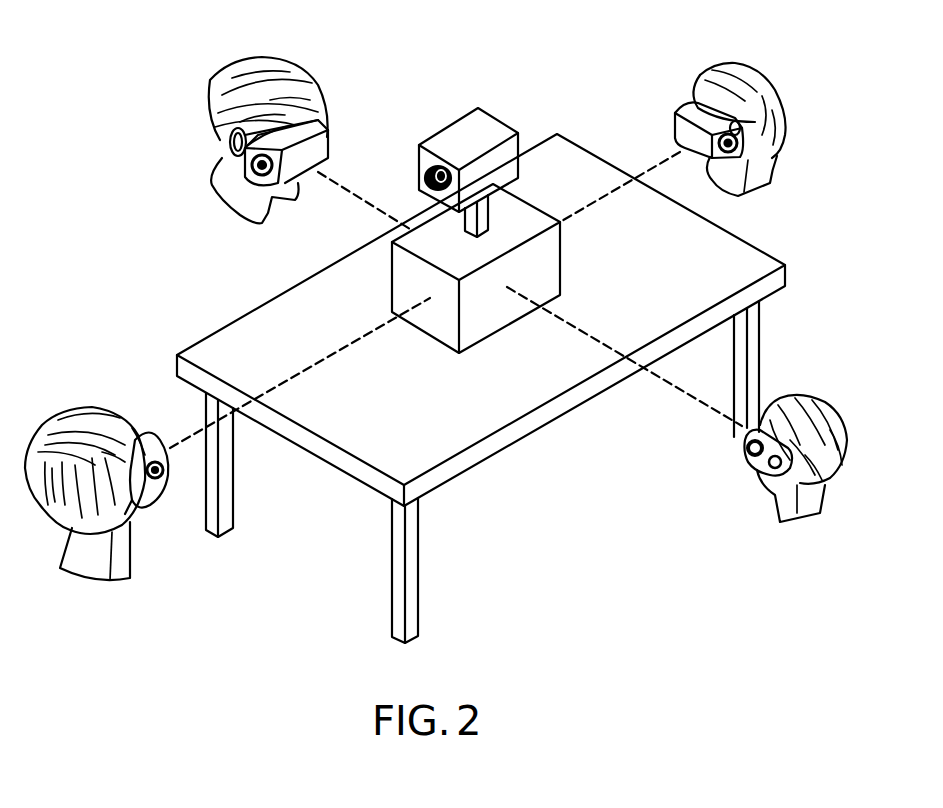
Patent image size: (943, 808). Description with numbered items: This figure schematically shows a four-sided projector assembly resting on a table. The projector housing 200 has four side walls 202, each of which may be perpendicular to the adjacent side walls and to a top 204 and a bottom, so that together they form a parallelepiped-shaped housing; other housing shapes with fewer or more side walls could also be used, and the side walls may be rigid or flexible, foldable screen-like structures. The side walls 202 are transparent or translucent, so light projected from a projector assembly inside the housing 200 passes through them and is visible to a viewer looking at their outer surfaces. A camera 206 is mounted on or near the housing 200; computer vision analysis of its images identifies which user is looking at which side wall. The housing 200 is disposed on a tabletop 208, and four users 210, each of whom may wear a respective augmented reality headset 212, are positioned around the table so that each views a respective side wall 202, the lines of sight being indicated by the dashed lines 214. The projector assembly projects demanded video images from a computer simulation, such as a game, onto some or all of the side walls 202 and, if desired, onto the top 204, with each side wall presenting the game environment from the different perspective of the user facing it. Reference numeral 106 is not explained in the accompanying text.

The physical environment 106 is at (145, 45).
The projector housing 200 is at (496, 227).
The side wall 202 is at (485, 307).
The top 204 is at (445, 225).
The camera 206 is at (502, 120).
The tabletop 208 is at (440, 430).
The user 210 is at (723, 122).
The augmented reality headset 212 is at (677, 124).
The dashed lines 214 is at (195, 432).